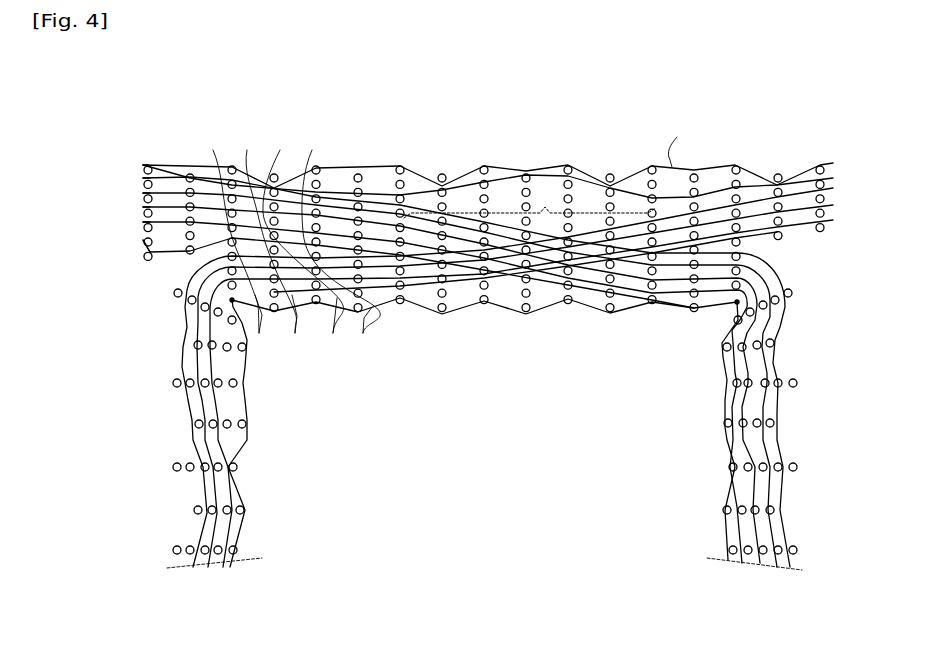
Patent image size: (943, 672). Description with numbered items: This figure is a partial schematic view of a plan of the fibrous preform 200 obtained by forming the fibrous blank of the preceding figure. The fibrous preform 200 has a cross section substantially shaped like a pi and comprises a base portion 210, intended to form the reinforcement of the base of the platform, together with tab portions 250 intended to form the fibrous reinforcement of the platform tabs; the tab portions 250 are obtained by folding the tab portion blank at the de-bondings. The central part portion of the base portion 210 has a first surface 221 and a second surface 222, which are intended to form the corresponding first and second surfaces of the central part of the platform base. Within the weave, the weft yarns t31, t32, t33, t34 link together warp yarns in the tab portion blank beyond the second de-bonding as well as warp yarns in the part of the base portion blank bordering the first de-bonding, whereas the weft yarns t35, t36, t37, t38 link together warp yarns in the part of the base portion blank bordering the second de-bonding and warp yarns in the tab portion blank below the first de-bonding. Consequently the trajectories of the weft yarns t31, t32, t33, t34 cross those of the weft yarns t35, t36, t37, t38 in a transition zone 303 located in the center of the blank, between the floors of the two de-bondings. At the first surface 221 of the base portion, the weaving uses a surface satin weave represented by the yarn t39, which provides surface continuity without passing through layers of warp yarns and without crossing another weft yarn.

The fibrous preform 200 is at (482, 410).
The base portion 210 is at (137, 160).
The first surface 221 is at (580, 158).
The second surface 222 is at (580, 308).
The tab portions 250 is at (183, 407).
The transition zone 303 is at (530, 199).
The weft yarn t31 is at (231, 232).
The weft yarn t32 is at (266, 232).
The weft yarn t33 is at (303, 232).
The weft yarn t34 is at (341, 232).
The weft yarn t35 is at (261, 329).
The weft yarn t36 is at (294, 329).
The weft yarn t37 is at (329, 330).
The weft yarn t38 is at (361, 335).
The weft yarn t39 is at (680, 143).